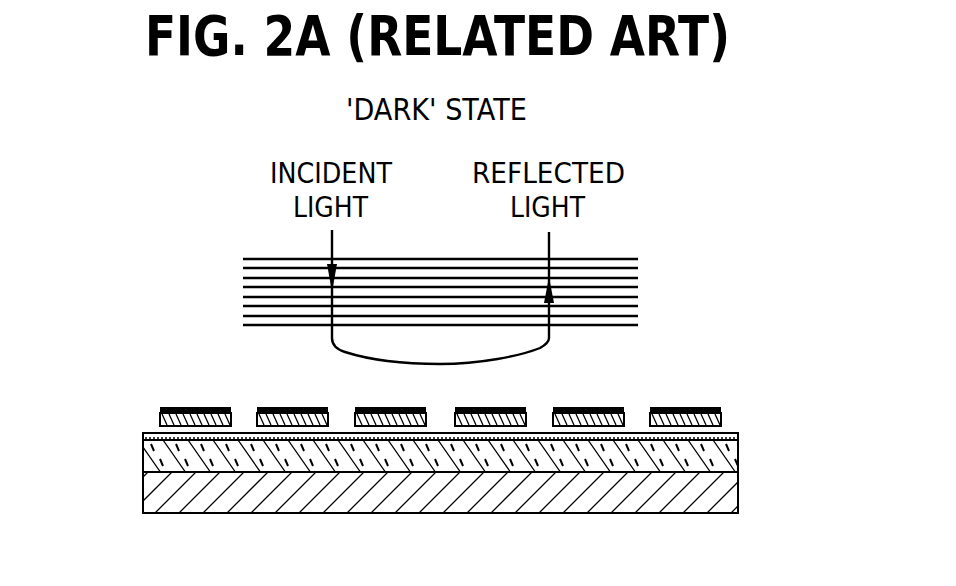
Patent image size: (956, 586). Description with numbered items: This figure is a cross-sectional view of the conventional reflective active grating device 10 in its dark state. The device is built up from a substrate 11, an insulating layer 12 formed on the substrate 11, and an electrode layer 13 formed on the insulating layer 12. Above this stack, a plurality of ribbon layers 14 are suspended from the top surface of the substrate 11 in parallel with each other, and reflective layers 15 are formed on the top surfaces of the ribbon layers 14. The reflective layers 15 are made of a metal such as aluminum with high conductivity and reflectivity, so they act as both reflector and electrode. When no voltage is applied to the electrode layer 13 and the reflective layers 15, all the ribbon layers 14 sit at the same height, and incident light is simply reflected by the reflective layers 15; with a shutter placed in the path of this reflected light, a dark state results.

The reflective active grating device 10 is at (156, 380).
The substrate 11 is at (157, 492).
The insulating layer 12 is at (157, 452).
The electrode layer 13 is at (143, 433).
The ribbon layers 14 is at (717, 421).
The reflective layers 15 is at (713, 410).